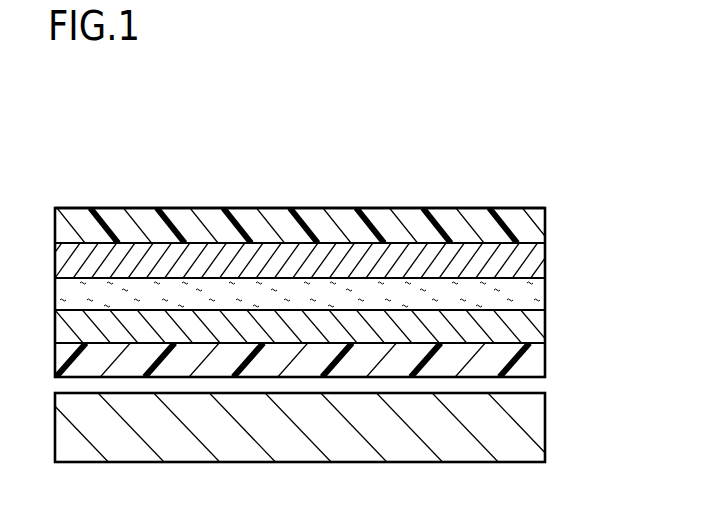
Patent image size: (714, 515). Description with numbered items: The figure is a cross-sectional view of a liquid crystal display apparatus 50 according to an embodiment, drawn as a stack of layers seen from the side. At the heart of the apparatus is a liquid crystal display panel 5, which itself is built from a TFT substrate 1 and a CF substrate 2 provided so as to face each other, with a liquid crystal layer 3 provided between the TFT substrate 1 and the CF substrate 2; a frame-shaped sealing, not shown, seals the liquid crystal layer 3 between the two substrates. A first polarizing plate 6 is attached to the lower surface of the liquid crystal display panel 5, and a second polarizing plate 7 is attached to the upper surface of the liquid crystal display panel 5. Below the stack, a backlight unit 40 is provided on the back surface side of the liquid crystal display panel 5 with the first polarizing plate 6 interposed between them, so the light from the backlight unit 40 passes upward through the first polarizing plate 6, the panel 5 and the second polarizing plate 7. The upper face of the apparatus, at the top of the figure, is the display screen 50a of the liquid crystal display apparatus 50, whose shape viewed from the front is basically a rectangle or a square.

The liquid crystal display apparatus 50 is at (98, 171).
The display screen 50a is at (475, 208).
The second polarizing plate 7 is at (530, 222).
The liquid crystal display panel 5 is at (347, 292).
The CF substrate 2 is at (530, 257).
The liquid crystal layer 3 is at (530, 291).
The TFT substrate 1 is at (331, 325).
The first polarizing plate 6 is at (530, 361).
The backlight unit 40 is at (530, 418).